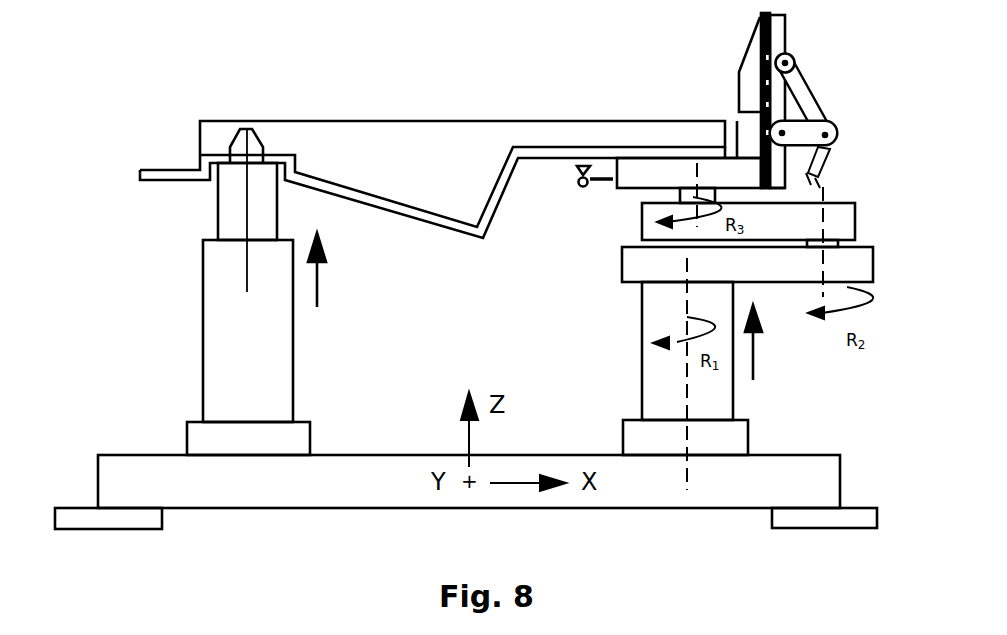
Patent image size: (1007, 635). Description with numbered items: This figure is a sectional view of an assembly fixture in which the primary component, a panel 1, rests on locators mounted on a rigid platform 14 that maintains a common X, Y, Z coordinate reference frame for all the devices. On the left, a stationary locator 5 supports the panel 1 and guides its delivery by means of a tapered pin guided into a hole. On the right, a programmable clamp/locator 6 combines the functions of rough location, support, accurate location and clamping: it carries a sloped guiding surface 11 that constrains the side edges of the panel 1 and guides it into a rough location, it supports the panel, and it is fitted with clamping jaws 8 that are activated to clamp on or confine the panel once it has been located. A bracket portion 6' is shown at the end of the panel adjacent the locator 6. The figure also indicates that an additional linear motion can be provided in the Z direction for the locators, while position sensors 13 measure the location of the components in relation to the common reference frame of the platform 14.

The panel 1 is at (167, 172).
The locator 5 is at (215, 360).
The programmable clamp/locator 6 is at (714, 351).
The bracket 6' is at (702, 122).
The clamping jaws 8 is at (770, 33).
The sloped guiding surface 11 is at (753, 38).
The position sensors 13 is at (583, 187).
The platform 14 is at (147, 468).